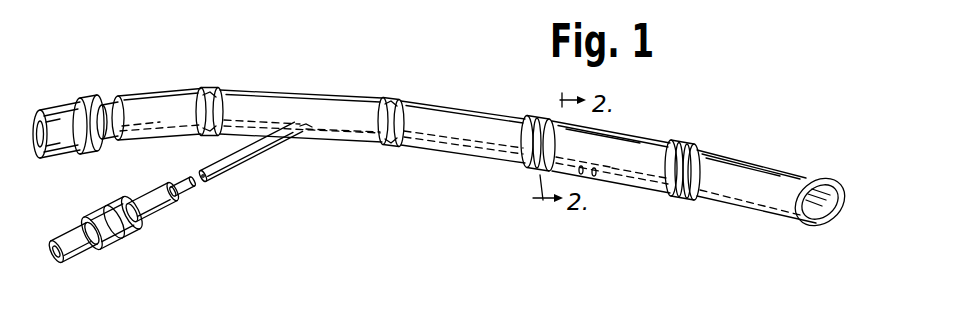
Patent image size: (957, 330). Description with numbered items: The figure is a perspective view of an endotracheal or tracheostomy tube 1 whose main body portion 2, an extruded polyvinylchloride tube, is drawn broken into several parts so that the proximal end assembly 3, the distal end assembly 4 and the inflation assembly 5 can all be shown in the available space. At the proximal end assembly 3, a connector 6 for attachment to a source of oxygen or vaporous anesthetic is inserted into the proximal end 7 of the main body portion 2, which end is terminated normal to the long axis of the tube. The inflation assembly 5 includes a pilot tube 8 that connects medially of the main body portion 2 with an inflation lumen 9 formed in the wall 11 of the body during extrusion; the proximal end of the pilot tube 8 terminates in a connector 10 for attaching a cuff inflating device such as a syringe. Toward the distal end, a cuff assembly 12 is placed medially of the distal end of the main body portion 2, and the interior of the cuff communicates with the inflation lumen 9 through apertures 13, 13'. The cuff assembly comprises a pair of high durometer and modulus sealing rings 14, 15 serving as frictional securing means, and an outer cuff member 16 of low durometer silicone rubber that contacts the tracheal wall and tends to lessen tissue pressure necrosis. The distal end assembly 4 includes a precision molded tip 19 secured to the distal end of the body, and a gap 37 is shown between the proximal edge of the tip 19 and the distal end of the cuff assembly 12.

The endotracheal or tracheostomy tube 1 is at (378, 66).
The main body portion 2 is at (446, 105).
The proximal end assembly 3 is at (128, 76).
The distal end assembly 4 is at (797, 148).
The inflation assembly 5 is at (139, 209).
The connector 6 is at (66, 108).
The proximal end 7 is at (132, 141).
The pilot tube 8 is at (250, 152).
The inflation lumen 9 is at (393, 142).
The connector 10 is at (73, 242).
The wall 11 is at (396, 97).
The cuff assembly 12 is at (663, 130).
The aperture 13 is at (583, 212).
The aperture 13' is at (629, 216).
The sealing ring 14 is at (674, 143).
The sealing ring 15 is at (529, 117).
The outer cuff member 16 is at (628, 133).
The tip 19 is at (806, 172).
The gap 37 is at (692, 182).